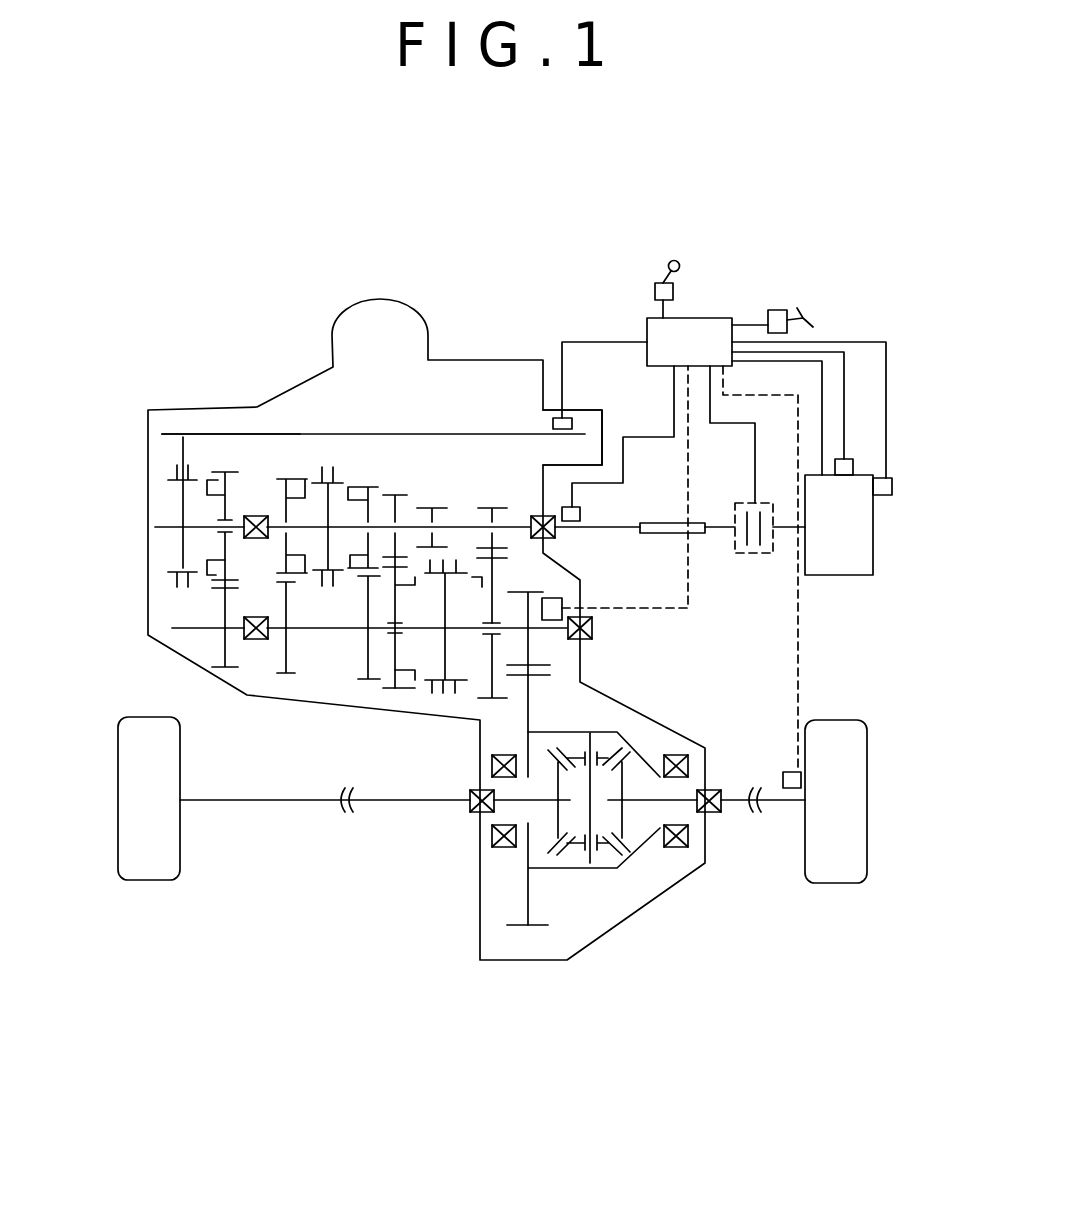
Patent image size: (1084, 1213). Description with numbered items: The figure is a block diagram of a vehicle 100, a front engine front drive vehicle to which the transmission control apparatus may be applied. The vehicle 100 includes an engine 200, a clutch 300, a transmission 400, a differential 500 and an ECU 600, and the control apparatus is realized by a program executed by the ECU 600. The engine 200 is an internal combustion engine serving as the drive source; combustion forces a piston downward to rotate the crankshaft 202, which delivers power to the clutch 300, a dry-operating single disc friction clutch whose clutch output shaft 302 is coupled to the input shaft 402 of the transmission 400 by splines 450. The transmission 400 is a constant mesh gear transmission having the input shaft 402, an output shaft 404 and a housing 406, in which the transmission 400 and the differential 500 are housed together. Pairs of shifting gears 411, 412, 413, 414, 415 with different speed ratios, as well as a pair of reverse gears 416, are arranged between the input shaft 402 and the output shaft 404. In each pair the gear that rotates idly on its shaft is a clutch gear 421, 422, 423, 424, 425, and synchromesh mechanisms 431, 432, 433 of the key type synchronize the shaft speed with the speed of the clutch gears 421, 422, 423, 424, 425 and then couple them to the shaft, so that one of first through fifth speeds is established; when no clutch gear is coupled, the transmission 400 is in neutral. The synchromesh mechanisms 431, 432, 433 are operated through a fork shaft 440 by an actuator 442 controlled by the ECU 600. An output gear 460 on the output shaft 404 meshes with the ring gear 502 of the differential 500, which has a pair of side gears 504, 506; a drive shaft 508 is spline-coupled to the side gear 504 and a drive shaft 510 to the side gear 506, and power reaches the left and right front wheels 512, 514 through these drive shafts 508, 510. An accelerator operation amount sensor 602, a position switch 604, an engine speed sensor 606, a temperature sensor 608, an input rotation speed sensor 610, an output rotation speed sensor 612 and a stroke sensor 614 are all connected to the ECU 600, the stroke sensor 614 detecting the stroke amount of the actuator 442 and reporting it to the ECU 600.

The vehicle 100 is at (536, 255).
The engine 200 is at (858, 577).
The crankshaft 202 is at (782, 533).
The clutch 300 is at (750, 503).
The clutch output shaft 302 is at (718, 533).
The transmission 400 is at (379, 364).
The input shaft 402 is at (638, 524).
The output shaft 404 is at (188, 640).
The housing 406 is at (470, 360).
The first speed shifting gear pair 411 is at (227, 452).
The second speed shifting gear pair 412 is at (288, 685).
The third speed shifting gear pair 413 is at (366, 693).
The fourth speed shifting gear pair 414 is at (399, 484).
The fifth speed shifting gear pair 415 is at (497, 497).
The reverse gears 416 is at (436, 497).
The clutch gear 421 is at (198, 575).
The clutch gear 422 is at (300, 467).
The clutch gear 423 is at (348, 485).
The clutch gear 424 is at (413, 686).
The clutch gear 425 is at (470, 683).
The synchromesh mechanism 431 is at (172, 470).
The synchromesh mechanism 432 is at (322, 466).
The synchromesh mechanism 433 is at (460, 563).
The fork shaft 440 is at (172, 434).
The actuator 442 is at (600, 410).
The splines 450 is at (655, 535).
The output gear 460 is at (547, 658).
The differential 500 is at (624, 890).
The ring gear 502 is at (535, 930).
The side gear 504 is at (631, 777).
The side gear 506 is at (560, 810).
The drive shaft 508 is at (727, 803).
The drive shaft 510 is at (250, 800).
The front wheel 512 is at (835, 884).
The front wheel 514 is at (147, 881).
The ECU 600 is at (687, 318).
The accelerator operation amount sensor 602 is at (787, 309).
The position switch 604 is at (655, 292).
The engine speed sensor 606 is at (885, 497).
The temperature sensor 608 is at (852, 458).
The input rotation speed sensor 610 is at (605, 513).
The output rotation speed sensor 612 is at (553, 597).
The stroke sensor 614 is at (565, 417).